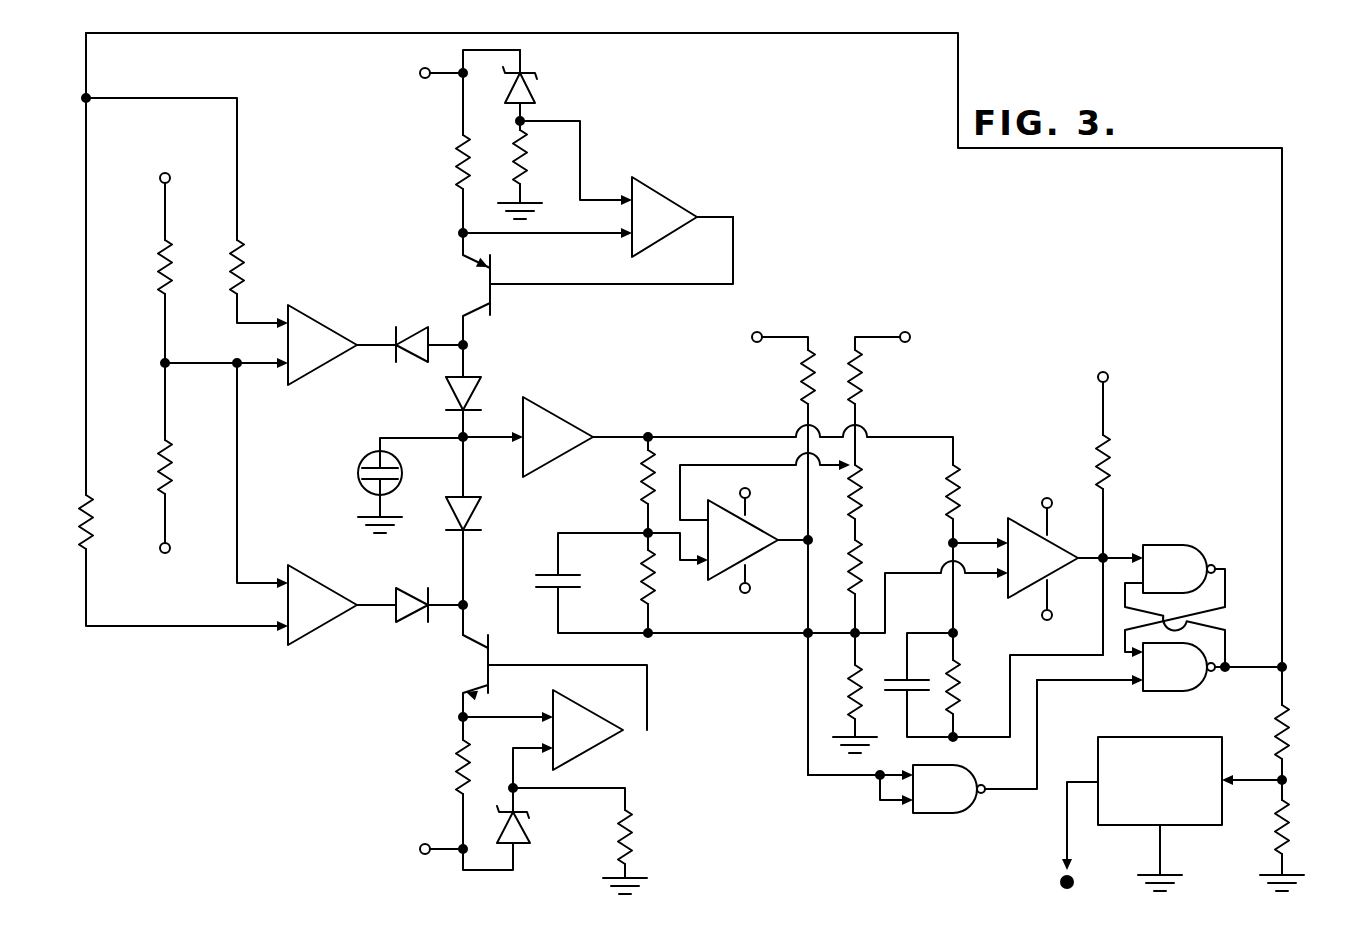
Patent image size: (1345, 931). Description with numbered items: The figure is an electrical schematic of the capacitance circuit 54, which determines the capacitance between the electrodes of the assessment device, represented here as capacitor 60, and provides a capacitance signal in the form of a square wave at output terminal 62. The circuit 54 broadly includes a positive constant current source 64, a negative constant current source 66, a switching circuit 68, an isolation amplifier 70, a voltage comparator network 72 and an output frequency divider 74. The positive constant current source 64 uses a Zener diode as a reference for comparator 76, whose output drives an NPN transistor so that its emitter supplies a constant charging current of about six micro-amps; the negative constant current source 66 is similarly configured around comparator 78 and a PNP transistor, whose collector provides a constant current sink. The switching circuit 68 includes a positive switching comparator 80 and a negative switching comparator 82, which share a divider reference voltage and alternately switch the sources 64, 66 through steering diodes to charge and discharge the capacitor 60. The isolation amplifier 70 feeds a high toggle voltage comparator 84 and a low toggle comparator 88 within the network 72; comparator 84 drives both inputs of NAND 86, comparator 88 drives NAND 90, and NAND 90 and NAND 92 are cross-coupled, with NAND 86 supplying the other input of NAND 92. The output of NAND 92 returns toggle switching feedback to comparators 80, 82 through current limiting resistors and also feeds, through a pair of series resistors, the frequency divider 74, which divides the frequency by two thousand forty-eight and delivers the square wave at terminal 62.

The capacitance circuit 54 is at (975, 243).
The capacitor 60 is at (360, 467).
The output terminal 62 is at (1058, 882).
The positive constant current source 64 is at (703, 165).
The negative constant current source 66 is at (400, 781).
The switching circuit 68 is at (328, 240).
The isolation amplifier 70 is at (556, 418).
The voltage comparator network 72 is at (956, 412).
The output frequency divider 74 is at (1152, 730).
The comparator 76 is at (672, 250).
The comparator 78 is at (587, 708).
The positive switching comparator 80 is at (327, 322).
The negative switching comparator 82 is at (322, 585).
The high toggle voltage comparator 84 is at (726, 592).
The NAND 86 is at (932, 816).
The low toggle comparator 88 is at (1016, 594).
The NAND 90 is at (1190, 548).
The NAND 92 is at (1193, 688).